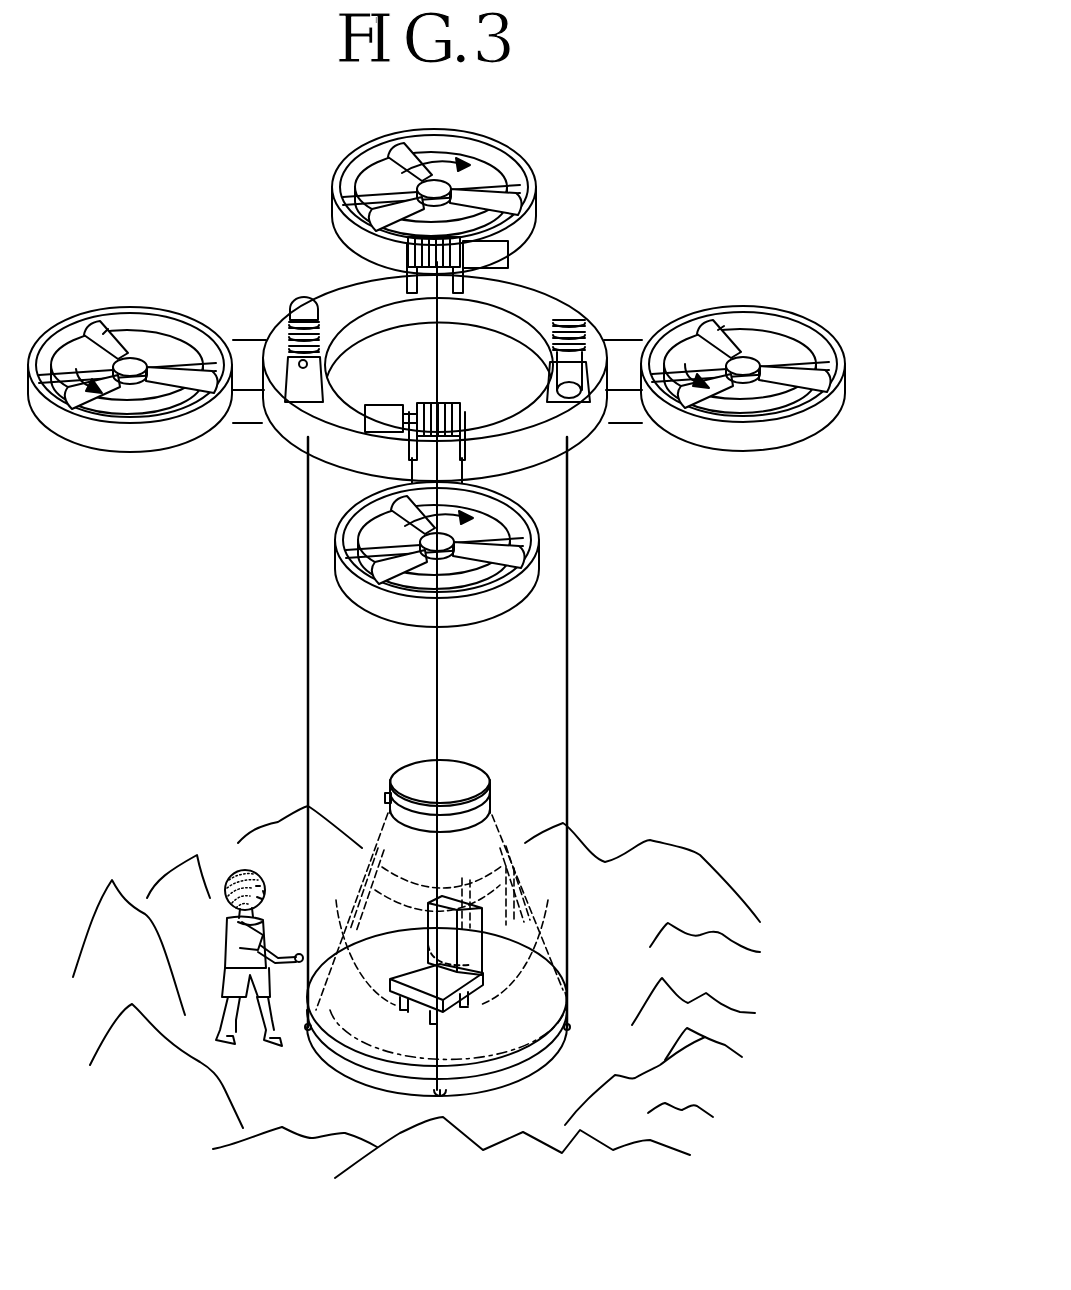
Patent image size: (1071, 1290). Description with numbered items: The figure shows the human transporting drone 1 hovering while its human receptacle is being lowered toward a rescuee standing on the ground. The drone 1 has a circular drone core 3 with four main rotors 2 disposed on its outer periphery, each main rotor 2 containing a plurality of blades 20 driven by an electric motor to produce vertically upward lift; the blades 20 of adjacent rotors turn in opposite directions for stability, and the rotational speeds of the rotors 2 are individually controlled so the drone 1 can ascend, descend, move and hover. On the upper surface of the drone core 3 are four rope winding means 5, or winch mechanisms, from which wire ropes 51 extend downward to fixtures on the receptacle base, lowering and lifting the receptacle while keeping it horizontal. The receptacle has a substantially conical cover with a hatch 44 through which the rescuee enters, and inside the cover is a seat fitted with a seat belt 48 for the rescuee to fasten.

The human transporting drone 1 is at (247, 166).
The main rotor 2 is at (536, 232).
The drone core 3 is at (594, 439).
The rope winding means 5 is at (282, 300).
The blade 20 is at (107, 332).
The hatch 44 is at (345, 925).
The seat belt 48 is at (492, 935).
The wire rope 51 is at (287, 327).